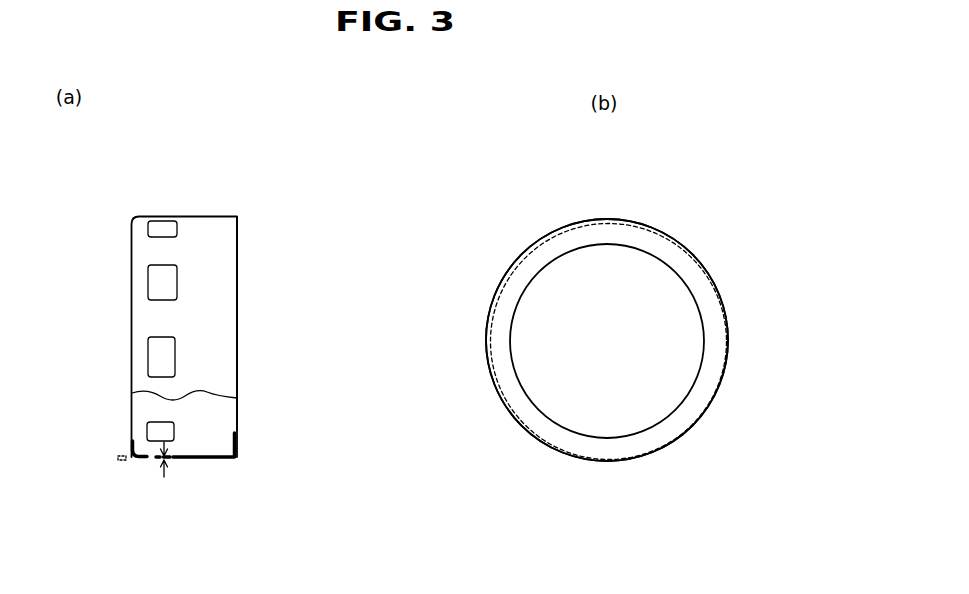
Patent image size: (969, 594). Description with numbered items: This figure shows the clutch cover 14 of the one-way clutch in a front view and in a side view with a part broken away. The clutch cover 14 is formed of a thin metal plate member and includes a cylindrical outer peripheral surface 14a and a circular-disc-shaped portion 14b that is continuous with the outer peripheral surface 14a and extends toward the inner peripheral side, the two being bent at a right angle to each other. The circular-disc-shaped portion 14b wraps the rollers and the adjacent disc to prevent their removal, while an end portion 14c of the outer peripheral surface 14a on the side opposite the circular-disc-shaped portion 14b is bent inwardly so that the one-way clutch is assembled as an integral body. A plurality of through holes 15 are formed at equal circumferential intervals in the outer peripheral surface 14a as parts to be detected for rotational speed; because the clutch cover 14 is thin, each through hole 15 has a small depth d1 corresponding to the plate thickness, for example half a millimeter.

The clutch cover 14 is at (68, 188).
The outer peripheral surface 14a is at (214, 232).
The circular-disc-shaped portion 14b is at (237, 446).
The end portion 14c is at (130, 447).
The through holes 15 is at (153, 280).
The depth of the through hole d1 is at (167, 473).